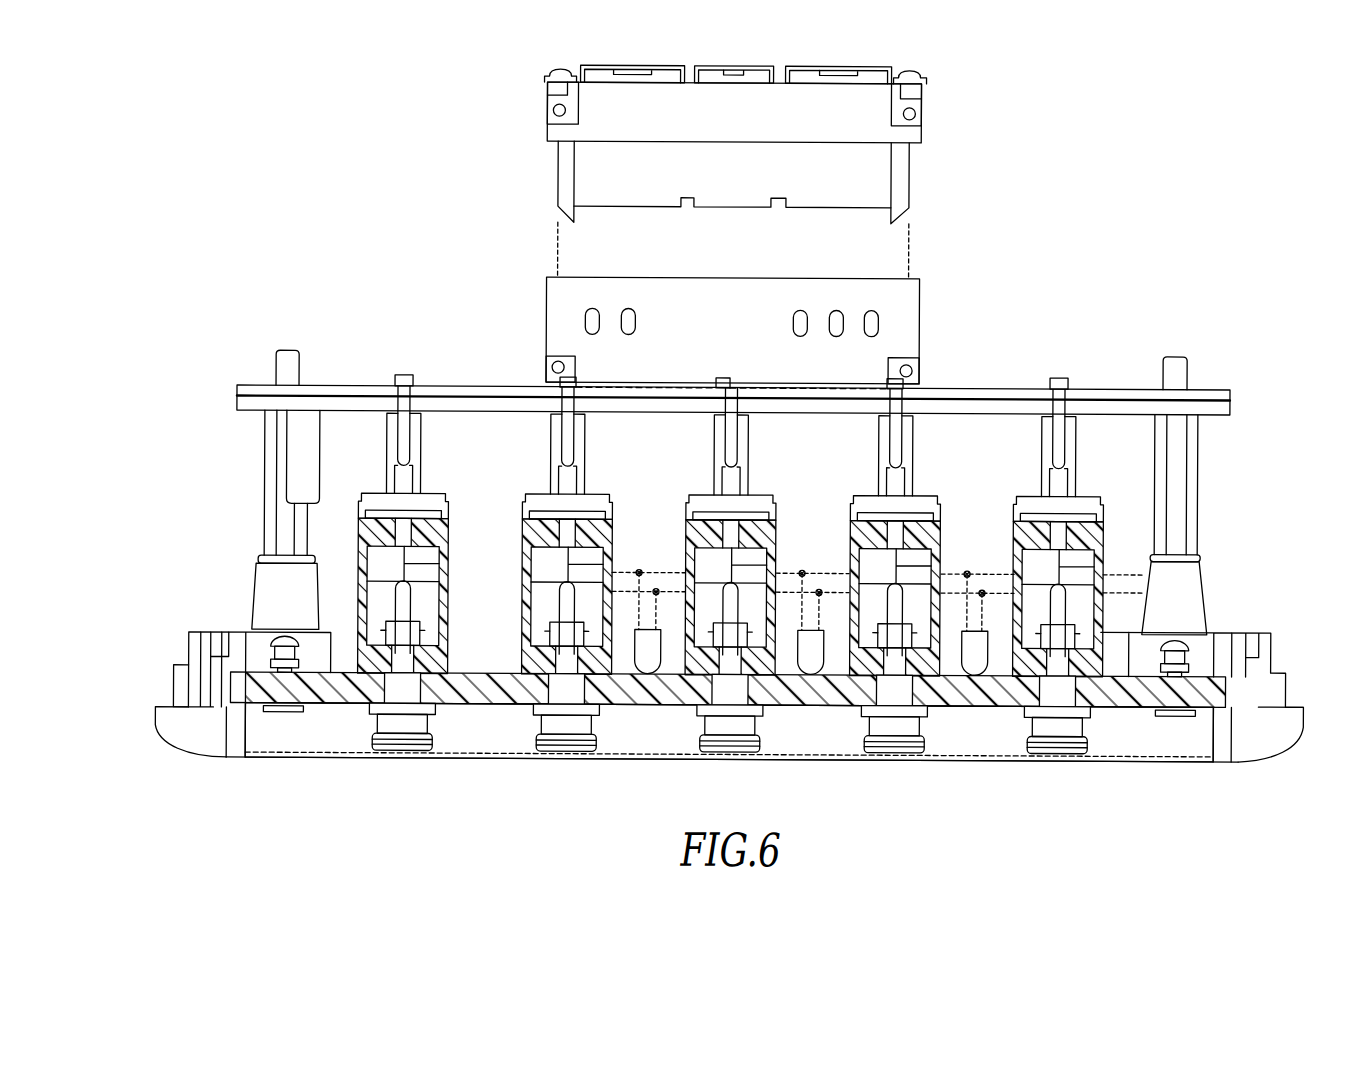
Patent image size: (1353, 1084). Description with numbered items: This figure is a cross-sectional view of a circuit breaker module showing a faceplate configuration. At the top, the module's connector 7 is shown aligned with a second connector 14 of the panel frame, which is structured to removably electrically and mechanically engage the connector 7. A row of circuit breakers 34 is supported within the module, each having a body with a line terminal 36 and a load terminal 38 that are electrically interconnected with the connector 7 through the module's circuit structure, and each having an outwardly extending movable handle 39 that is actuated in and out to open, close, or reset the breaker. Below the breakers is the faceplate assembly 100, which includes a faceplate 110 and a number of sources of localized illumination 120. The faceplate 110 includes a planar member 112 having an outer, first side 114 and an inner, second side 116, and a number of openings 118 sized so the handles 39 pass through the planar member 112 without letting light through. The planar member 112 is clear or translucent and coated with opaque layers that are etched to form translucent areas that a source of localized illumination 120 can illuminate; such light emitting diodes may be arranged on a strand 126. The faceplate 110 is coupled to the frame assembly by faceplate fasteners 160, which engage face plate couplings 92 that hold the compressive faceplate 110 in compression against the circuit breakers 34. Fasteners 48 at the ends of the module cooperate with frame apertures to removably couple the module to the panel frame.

The second connector 14 is at (928, 166).
The connector 7 is at (933, 299).
The line terminal 36 is at (1092, 438).
The load terminal 38 is at (1150, 442).
The circuit breaker 34 is at (1013, 526).
The strand 126 is at (1124, 572).
The face plate coupling 92 is at (1200, 590).
The faceplate assembly 100 is at (716, 579).
The inner, second side 116 is at (503, 674).
The outer, first side 114 is at (503, 706).
The planar member 112 is at (681, 707).
The faceplate 110 is at (948, 707).
The handle 39 is at (405, 754).
The source of localized illumination 120 is at (646, 705).
The opening 118 is at (885, 718).
The faceplate fastener 160 is at (1176, 714).
The fastener 48 is at (170, 750).